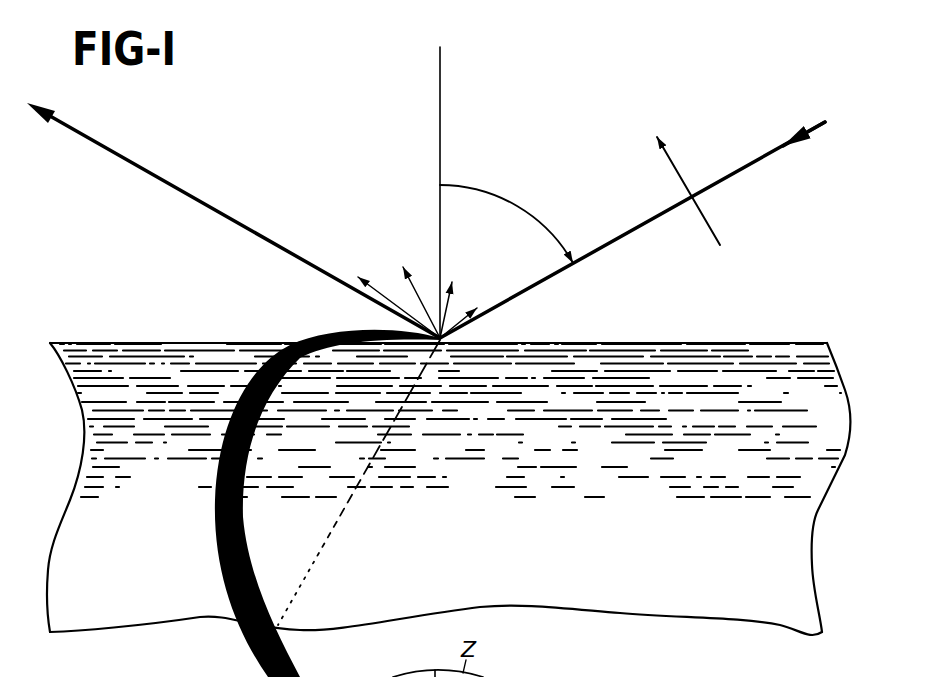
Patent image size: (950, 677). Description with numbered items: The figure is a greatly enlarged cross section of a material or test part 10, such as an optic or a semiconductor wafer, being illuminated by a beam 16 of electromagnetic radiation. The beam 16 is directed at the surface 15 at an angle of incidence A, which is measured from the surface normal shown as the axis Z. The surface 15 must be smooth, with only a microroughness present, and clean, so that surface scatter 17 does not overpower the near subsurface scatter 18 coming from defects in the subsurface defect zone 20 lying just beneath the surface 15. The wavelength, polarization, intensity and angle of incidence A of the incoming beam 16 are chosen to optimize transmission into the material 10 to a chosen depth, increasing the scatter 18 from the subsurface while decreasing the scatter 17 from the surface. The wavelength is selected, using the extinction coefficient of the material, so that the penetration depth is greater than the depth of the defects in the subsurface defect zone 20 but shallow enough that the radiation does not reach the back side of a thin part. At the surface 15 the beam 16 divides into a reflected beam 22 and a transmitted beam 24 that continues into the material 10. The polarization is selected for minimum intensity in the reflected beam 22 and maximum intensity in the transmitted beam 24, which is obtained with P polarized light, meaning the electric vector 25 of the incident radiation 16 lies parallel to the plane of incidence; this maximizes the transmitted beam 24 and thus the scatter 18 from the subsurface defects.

The material or test part 10 is at (845, 378).
The surface 15 is at (772, 342).
The beam of electromagnetic radiation 16 is at (762, 161).
The surface scatter 17 is at (349, 304).
The subsurface scatter 18 is at (485, 330).
The subsurface defect zone 20 is at (50, 343).
The reflected beam 22 is at (184, 191).
The transmitted beam 24 is at (348, 493).
The electric vector 25 is at (707, 222).
The surface normal axis Z is at (440, 73).
The angle of incidence A is at (512, 202).